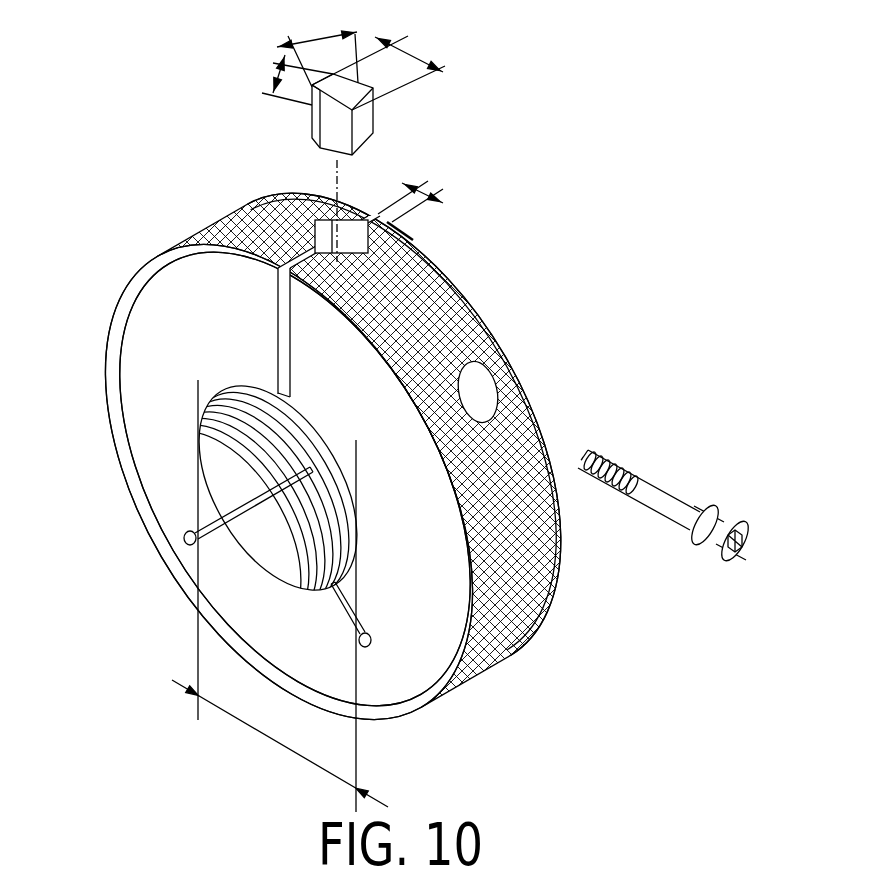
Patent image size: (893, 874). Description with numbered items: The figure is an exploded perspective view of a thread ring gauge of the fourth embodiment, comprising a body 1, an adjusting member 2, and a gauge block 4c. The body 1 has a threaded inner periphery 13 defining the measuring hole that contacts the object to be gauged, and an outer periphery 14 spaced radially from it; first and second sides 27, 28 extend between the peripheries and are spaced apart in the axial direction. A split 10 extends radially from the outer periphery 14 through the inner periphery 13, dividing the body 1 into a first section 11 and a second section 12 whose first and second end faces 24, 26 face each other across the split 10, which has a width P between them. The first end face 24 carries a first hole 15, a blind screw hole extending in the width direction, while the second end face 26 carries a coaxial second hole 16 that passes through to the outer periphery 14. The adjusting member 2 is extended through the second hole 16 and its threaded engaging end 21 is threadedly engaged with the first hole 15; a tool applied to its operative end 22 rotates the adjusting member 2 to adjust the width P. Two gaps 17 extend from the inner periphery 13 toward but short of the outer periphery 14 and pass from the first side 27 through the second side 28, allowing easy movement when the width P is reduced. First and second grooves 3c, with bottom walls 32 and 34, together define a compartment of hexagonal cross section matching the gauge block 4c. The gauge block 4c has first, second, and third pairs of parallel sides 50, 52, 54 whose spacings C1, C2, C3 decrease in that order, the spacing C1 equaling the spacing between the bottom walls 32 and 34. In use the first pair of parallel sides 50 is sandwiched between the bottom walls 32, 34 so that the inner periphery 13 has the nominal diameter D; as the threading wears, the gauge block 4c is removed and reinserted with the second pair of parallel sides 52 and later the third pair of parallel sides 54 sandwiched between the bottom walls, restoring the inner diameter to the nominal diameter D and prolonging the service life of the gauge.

The body 1 is at (344, 458).
The adjusting member 2 is at (676, 461).
The first and second grooves 3c is at (270, 190).
The gauge block 4c is at (380, 68).
The split 10 is at (211, 331).
The first section 11 is at (152, 313).
The second section 12 is at (458, 668).
The inner periphery 13 is at (280, 548).
The outer periphery 14 is at (508, 657).
The first hole 15 is at (247, 263).
The second hole 16 is at (478, 378).
The gaps 17 is at (183, 532).
The threaded engaging end 21 is at (607, 450).
The operative end 22 is at (728, 520).
The first end face 24 is at (287, 345).
The second end face 26 is at (287, 372).
The first side 27 is at (163, 532).
The second side 28 is at (493, 318).
The bottom wall 32 is at (347, 212).
The bottom wall 34 is at (400, 212).
The first pair of parallel sides 50 is at (366, 87).
The second pair of parallel sides 52 is at (322, 72).
The third pair of parallel sides 54 is at (352, 93).
The spacing between first pair of parallel sides C1 is at (378, 64).
The spacing between second pair of parallel sides C2 is at (317, 43).
The spacing between third pair of parallel sides C3 is at (284, 80).
The nominal diameter D is at (280, 596).
The width of split P is at (414, 189).